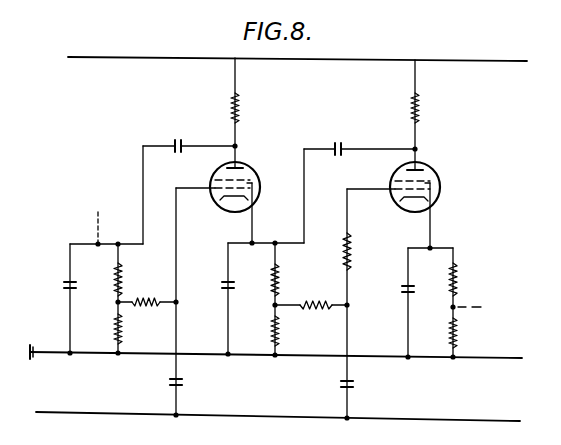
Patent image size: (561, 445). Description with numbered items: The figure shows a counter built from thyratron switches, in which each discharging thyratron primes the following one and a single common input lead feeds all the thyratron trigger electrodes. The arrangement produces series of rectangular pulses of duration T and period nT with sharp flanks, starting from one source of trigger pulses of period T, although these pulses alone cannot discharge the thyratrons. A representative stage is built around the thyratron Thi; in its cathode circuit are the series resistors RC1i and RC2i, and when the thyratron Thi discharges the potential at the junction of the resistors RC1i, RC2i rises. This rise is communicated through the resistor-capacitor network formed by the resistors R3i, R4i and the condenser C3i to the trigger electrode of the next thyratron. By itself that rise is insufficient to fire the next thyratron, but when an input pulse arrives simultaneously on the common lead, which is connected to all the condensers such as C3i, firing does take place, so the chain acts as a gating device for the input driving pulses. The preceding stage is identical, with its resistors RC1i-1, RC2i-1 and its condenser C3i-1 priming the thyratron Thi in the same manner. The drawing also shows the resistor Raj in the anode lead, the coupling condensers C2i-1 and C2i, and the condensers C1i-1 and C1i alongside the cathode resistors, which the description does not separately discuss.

The anode resistor of stage j Raj is at (250, 108).
The coupling capacitor C2i-1 is at (189, 135).
The coupling capacitor C2i is at (359, 137).
The thyratron Thi is at (230, 199).
The capacitor C1i-1 is at (90, 296).
The resistor RC1i-1 is at (146, 279).
The resistor RC2i-1 is at (120, 340).
The condenser C3i-1 is at (198, 383).
The capacitor C1i is at (240, 296).
The resistor RC1i is at (294, 280).
The resistor R3i is at (311, 297).
The resistor RC2i is at (294, 331).
The resistor R4i is at (363, 251).
The condenser C3i is at (361, 386).